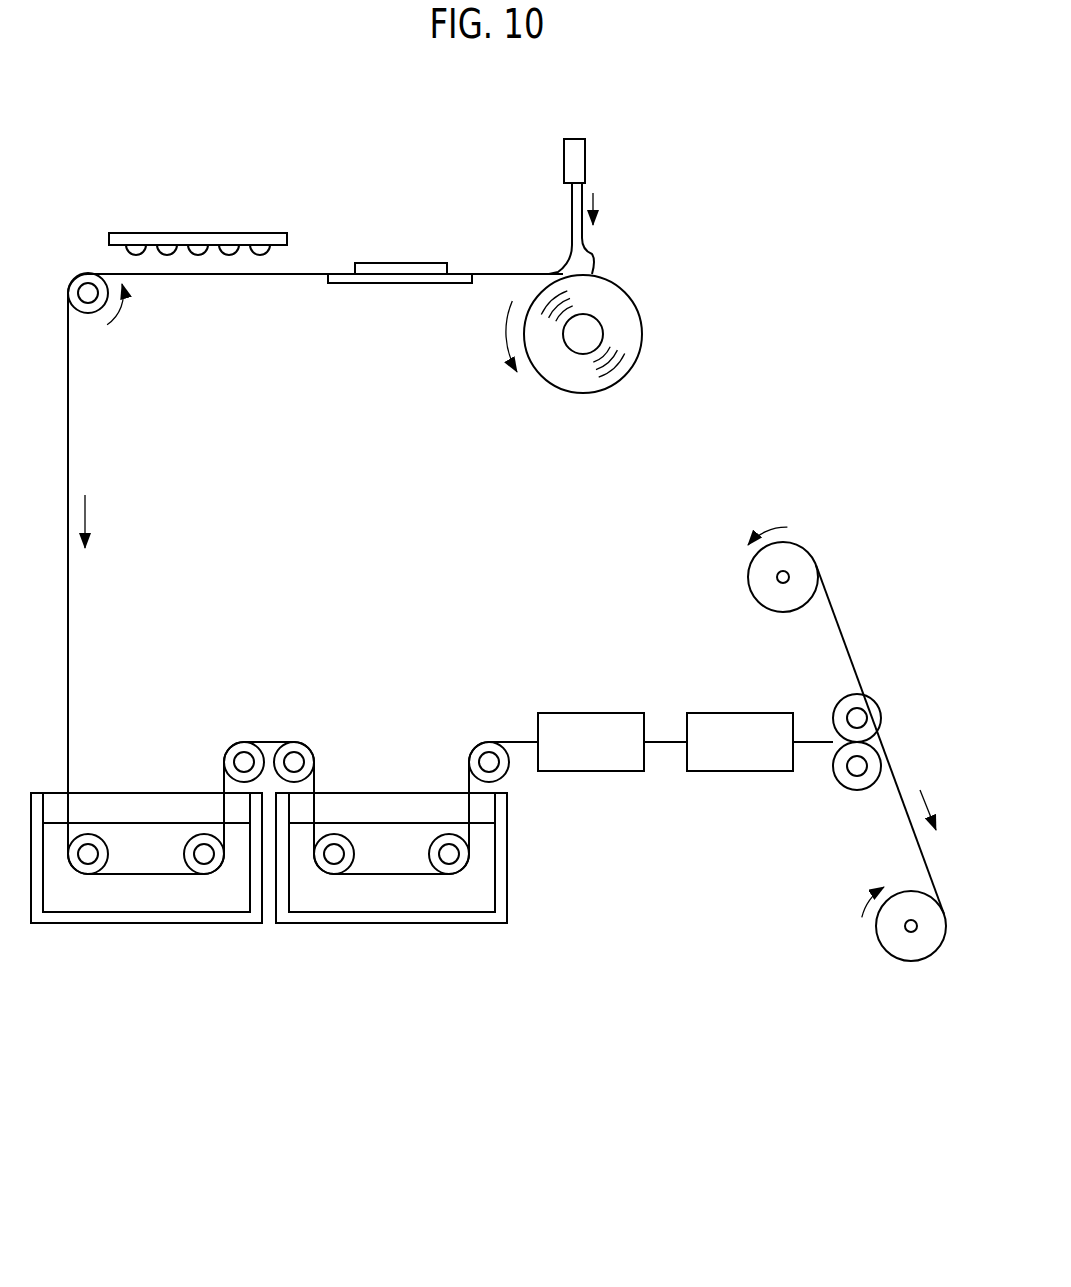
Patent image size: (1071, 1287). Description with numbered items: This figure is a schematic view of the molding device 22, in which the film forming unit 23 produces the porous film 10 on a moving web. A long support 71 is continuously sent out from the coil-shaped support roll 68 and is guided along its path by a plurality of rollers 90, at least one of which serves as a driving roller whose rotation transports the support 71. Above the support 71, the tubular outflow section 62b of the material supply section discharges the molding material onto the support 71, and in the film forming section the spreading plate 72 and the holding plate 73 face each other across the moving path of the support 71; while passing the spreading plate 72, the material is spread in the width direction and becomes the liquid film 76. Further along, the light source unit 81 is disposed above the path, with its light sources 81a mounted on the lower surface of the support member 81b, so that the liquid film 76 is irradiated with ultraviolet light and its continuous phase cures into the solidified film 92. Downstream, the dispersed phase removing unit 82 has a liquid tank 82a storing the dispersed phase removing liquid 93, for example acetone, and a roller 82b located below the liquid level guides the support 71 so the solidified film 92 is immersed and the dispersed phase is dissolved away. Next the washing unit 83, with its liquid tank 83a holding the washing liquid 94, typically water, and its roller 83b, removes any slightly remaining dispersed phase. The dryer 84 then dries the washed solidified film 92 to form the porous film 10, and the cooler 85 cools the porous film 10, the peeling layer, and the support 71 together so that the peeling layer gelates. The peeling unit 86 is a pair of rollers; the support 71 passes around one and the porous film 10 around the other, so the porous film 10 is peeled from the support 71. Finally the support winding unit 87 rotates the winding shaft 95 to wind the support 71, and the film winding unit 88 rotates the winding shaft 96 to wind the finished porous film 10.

The porous film 10 is at (667, 740).
The molding device 22 is at (202, 1097).
The film forming unit 23 is at (442, 178).
The outflow section 62b is at (585, 158).
The support roll 68 is at (630, 317).
The support 71 is at (303, 292).
The spreading plate 72 is at (385, 262).
The holding plate 73 is at (425, 283).
The liquid film 76 is at (312, 253).
The light source unit 81 is at (191, 222).
The light sources 81a is at (259, 248).
The support member 81b is at (116, 232).
The dispersed phase removing unit 82 is at (146, 877).
The liquid tank 82a is at (102, 925).
The roller 82b is at (190, 850).
The washing unit 83 is at (391, 878).
The liquid tank 83a is at (348, 925).
The roller 83b is at (435, 850).
The dryer 84 is at (592, 771).
The cooler 85 is at (740, 771).
The peeling unit 86 is at (847, 790).
The support winding unit 87 is at (760, 603).
The film winding unit 88 is at (893, 967).
The rollers 90 is at (88, 310).
The solidified film 92 is at (52, 404).
The dispersed phase removing liquid 93 is at (198, 905).
The washing liquid 94 is at (444, 905).
The winding shaft 95 is at (783, 577).
The winding shaft 96 is at (911, 926).